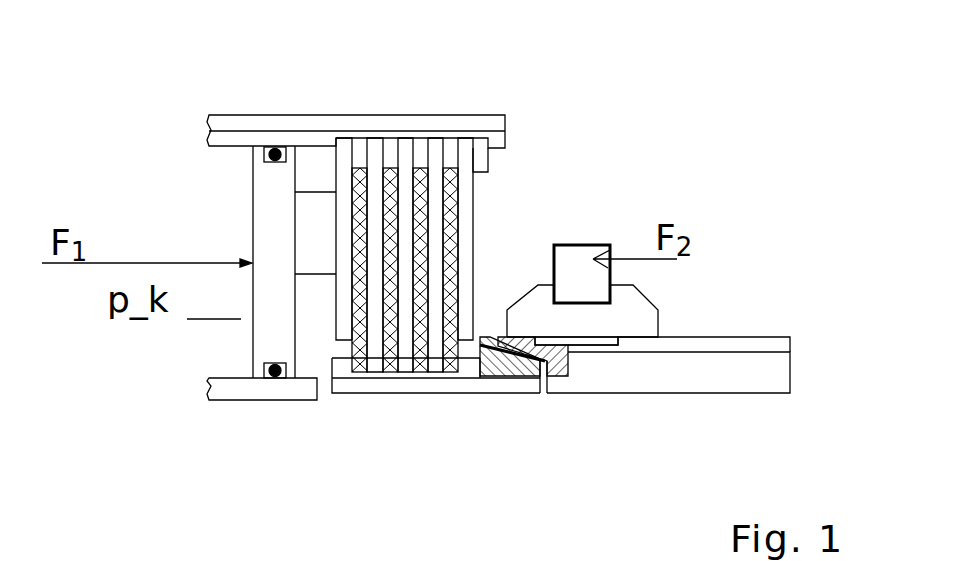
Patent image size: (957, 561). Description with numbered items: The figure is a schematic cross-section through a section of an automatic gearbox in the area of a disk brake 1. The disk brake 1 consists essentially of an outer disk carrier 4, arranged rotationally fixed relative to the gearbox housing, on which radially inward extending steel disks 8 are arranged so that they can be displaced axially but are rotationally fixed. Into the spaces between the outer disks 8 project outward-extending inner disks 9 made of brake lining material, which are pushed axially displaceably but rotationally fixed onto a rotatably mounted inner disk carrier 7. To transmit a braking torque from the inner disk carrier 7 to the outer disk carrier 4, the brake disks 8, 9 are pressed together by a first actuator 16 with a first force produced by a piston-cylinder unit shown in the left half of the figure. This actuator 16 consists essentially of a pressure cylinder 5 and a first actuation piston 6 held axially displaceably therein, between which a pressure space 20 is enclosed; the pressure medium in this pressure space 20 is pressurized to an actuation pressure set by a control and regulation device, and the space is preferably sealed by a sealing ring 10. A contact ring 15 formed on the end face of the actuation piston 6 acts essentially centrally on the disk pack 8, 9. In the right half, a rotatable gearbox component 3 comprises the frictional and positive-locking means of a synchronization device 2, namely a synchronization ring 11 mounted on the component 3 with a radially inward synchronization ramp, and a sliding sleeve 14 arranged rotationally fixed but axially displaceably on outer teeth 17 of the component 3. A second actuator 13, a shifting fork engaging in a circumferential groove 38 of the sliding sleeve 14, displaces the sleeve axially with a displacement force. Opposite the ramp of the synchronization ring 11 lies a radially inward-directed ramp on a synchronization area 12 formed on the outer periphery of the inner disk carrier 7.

The disk brake 1 is at (515, 183).
The synchronization device 2 is at (467, 407).
The gearbox component 3 is at (773, 378).
The outer disk carrier 4 is at (274, 122).
The pressure cylinder 5 is at (282, 392).
The first actuation piston 6 is at (270, 248).
The inner disk carrier 7 is at (375, 383).
The steel disks 8 is at (468, 163).
The inner disks 9 is at (456, 168).
The sealing ring 10 is at (266, 368).
The synchronization ring 11 is at (570, 365).
The synchronization area 12 is at (517, 380).
The second actuator 13 is at (606, 161).
The sliding sleeve 14 is at (653, 307).
The contact ring 15 is at (315, 213).
The first actuator 16 is at (200, 188).
The outer teeth 17 is at (775, 345).
The pressure space 20 is at (214, 298).
The circumferential groove 38 is at (552, 298).